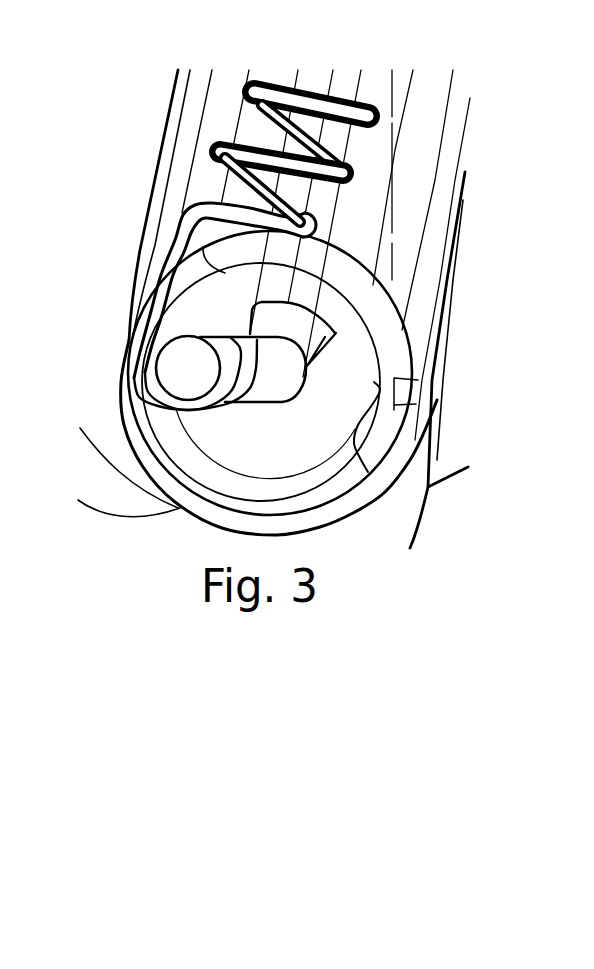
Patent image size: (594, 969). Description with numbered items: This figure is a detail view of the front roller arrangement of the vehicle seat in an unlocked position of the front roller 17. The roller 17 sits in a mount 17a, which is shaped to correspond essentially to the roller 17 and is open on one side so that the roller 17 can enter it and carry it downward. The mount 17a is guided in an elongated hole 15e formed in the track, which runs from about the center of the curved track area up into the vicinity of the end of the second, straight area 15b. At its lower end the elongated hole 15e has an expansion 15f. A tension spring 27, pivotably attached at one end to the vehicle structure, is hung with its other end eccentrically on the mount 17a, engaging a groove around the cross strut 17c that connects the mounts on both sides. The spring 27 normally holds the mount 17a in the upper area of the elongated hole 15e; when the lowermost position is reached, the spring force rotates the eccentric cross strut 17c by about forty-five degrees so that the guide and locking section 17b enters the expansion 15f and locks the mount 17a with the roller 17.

The second, straight area 15b is at (158, 167).
The elongated hole 15e is at (320, 191).
The expansion 15f is at (323, 333).
The front roller 17 is at (370, 289).
The mount 17a is at (366, 454).
The guide and locking section 17b is at (300, 323).
The cross strut 17c is at (180, 372).
The tension spring 27 is at (360, 110).